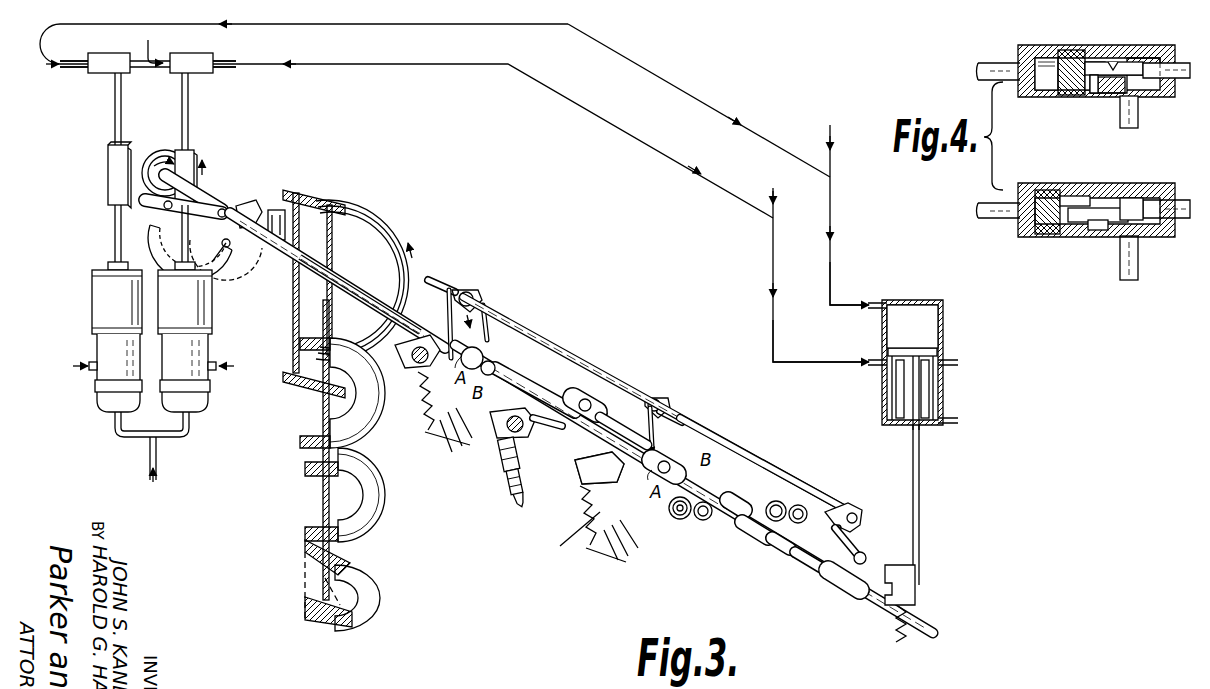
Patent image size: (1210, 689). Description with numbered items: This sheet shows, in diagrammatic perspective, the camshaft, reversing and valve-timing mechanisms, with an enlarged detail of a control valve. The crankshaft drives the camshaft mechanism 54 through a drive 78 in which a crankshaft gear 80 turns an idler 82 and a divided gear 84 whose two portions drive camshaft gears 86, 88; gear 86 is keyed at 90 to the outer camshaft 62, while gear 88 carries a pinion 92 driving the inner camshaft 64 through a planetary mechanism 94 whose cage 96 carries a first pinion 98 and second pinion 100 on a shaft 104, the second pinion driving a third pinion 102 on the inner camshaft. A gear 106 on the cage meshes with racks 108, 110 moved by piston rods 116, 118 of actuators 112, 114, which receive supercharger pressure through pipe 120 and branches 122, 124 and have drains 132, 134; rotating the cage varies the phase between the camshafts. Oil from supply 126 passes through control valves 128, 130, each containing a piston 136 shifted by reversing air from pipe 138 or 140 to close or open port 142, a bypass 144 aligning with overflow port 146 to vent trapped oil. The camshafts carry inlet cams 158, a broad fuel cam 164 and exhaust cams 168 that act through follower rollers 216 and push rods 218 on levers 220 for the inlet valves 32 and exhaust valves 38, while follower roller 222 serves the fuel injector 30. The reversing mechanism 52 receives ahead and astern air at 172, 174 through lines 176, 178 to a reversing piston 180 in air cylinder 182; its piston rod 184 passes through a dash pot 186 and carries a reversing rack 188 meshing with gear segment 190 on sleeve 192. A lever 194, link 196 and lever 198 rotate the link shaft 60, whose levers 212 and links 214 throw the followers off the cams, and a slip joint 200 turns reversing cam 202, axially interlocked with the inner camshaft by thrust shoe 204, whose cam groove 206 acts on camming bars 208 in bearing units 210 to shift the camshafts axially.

In FIG. 3, the fuel injector 30 is at (505, 482).
In FIG. 3, the inlet valves 32 is at (426, 432).
In FIG. 3, the exhaust valves 38 is at (585, 528).
In FIG. 3, the reversing mechanism 52 is at (952, 334).
In FIG. 3, the camshaft mechanism 54 is at (609, 428).
In FIG. 3, the link shaft 60 is at (720, 442).
In FIG. 3, the outer camshaft 62 is at (522, 382).
In FIG. 3, the inner camshaft 64 is at (500, 368).
In FIG. 3, the drive 78 is at (297, 478).
In FIG. 3, the crankshaft gear 80 is at (386, 584).
In FIG. 3, the idler 82 is at (390, 498).
In FIG. 3, the divided gear 84 is at (370, 442).
In FIG. 3, the camshaft gear 86 is at (342, 210).
In FIG. 3, the camshaft gear 88 is at (300, 200).
In FIG. 3, the key 90 is at (345, 280).
In FIG. 3, the pinion 92 is at (279, 212).
In FIG. 3, the planetary mechanism 94 is at (204, 204).
In FIG. 3, the cage 96 is at (198, 194).
In FIG. 3, the first pinion 98 is at (218, 268).
In FIG. 3, the second pinion 100 is at (150, 238).
In FIG. 3, the third pinion 102 is at (248, 200).
In FIG. 3, the shaft 104 is at (230, 247).
In FIG. 3, the gear 106 is at (141, 153).
In FIG. 3, the rack 108 is at (108, 168).
In FIG. 3, the rack 110 is at (195, 158).
In FIG. 3, the actuator 112 is at (95, 310).
In FIG. 3, the actuator 114 is at (204, 316).
In FIG. 3, the piston rod 116 is at (115, 252).
In FIG. 4, the piston rod 116 is at (1130, 128).
In FIG. 3, the piston rod 118 is at (178, 260).
In FIG. 3, the pipe 120 is at (158, 468).
In FIG. 3, the branch 122 is at (132, 437).
In FIG. 3, the branch 124 is at (185, 434).
In FIG. 3, the oil supply 126 is at (152, 40).
In FIG. 4, the oil supply 126 is at (1186, 68).
In FIG. 3, the control valve 128 is at (120, 53).
In FIG. 3, the control valve 130 is at (207, 53).
In FIG. 3, the drain 132 is at (92, 372).
In FIG. 3, the drain 134 is at (214, 372).
In FIG. 4, the piston 136 is at (1072, 58).
In FIG. 3, the pipe 138 is at (72, 68).
In FIG. 4, the pipe 138 is at (990, 68).
In FIG. 3, the pipe 140 is at (232, 69).
In FIG. 4, the pipe 140 is at (999, 210).
In FIG. 4, the port 142 is at (1138, 100).
In FIG. 4, the bypass 144 is at (1116, 62).
In FIG. 4, the overflow port 146 is at (1092, 92).
In FIG. 3, the inlet cams 158 is at (482, 314).
In FIG. 3, the fuel cam 164 is at (585, 398).
In FIG. 3, the exhaust cams 168 is at (686, 458).
In FIG. 3, the ahead air source 172 is at (835, 142).
In FIG. 3, the astern air source 174 is at (771, 190).
In FIG. 3, the line 176 is at (831, 280).
In FIG. 3, the line 178 is at (775, 340).
In FIG. 3, the reversing piston 180 is at (898, 348).
In FIG. 3, the air cylinder 182 is at (920, 302).
In FIG. 3, the piston rod 184 is at (921, 535).
In FIG. 3, the dash pot 186 is at (936, 396).
In FIG. 3, the reversing rack 188 is at (918, 598).
In FIG. 3, the gear segment 190 is at (888, 618).
In FIG. 3, the sleeve 192 is at (857, 592).
In FIG. 3, the lever 194 is at (866, 559).
In FIG. 3, the link 196 is at (852, 540).
In FIG. 3, the lever 198 is at (840, 510).
In FIG. 3, the slip joint 200 is at (790, 560).
In FIG. 3, the reversing cam 202 is at (747, 535).
In FIG. 3, the thrust shoe 204 is at (770, 548).
In FIG. 3, the cam groove 206 is at (745, 505).
In FIG. 3, the camming bars 208 is at (711, 522).
In FIG. 3, the bearing units 210 is at (688, 520).
In FIG. 3, the levers 212 is at (462, 290).
In FIG. 3, the links 214 is at (432, 281).
In FIG. 3, the follower rollers 216 is at (448, 360).
In FIG. 3, the push rods 218 is at (447, 322).
In FIG. 3, the levers 220 is at (585, 466).
In FIG. 3, the follower roller 222 is at (565, 426).